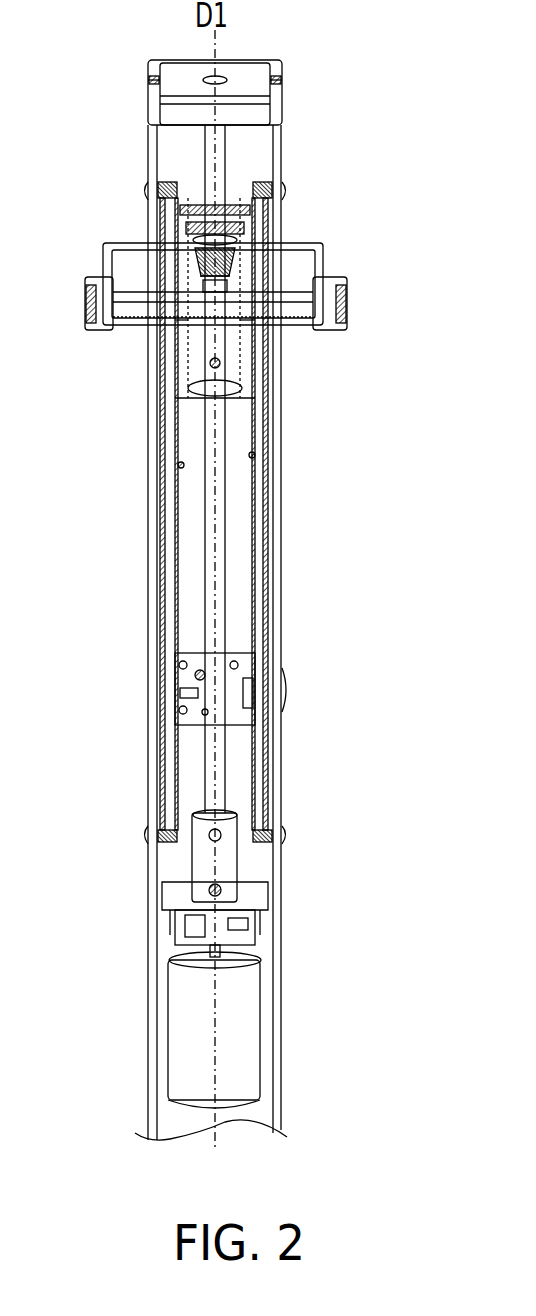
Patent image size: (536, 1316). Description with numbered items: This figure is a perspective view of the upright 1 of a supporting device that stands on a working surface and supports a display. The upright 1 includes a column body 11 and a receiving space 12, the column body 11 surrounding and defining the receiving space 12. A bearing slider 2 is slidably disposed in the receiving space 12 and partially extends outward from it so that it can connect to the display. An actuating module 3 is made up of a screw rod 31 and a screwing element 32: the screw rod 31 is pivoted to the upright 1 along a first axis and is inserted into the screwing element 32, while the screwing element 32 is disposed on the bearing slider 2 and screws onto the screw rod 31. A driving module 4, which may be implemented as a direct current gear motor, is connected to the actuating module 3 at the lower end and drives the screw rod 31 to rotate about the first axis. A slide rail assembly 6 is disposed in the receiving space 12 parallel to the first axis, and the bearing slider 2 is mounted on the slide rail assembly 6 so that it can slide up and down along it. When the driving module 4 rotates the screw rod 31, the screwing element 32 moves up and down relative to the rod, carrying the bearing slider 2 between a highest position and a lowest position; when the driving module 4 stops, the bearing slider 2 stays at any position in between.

The upright 1 is at (253, 600).
The column body 11 is at (281, 1050).
The receiving space 12 is at (333, 1023).
The bearing slider 2 is at (323, 248).
The actuating module 3 is at (293, 466).
The screw rod 31 is at (220, 145).
The screwing element 32 is at (223, 213).
The driving module 4 is at (255, 997).
The slide rail assembly 6 is at (263, 770).